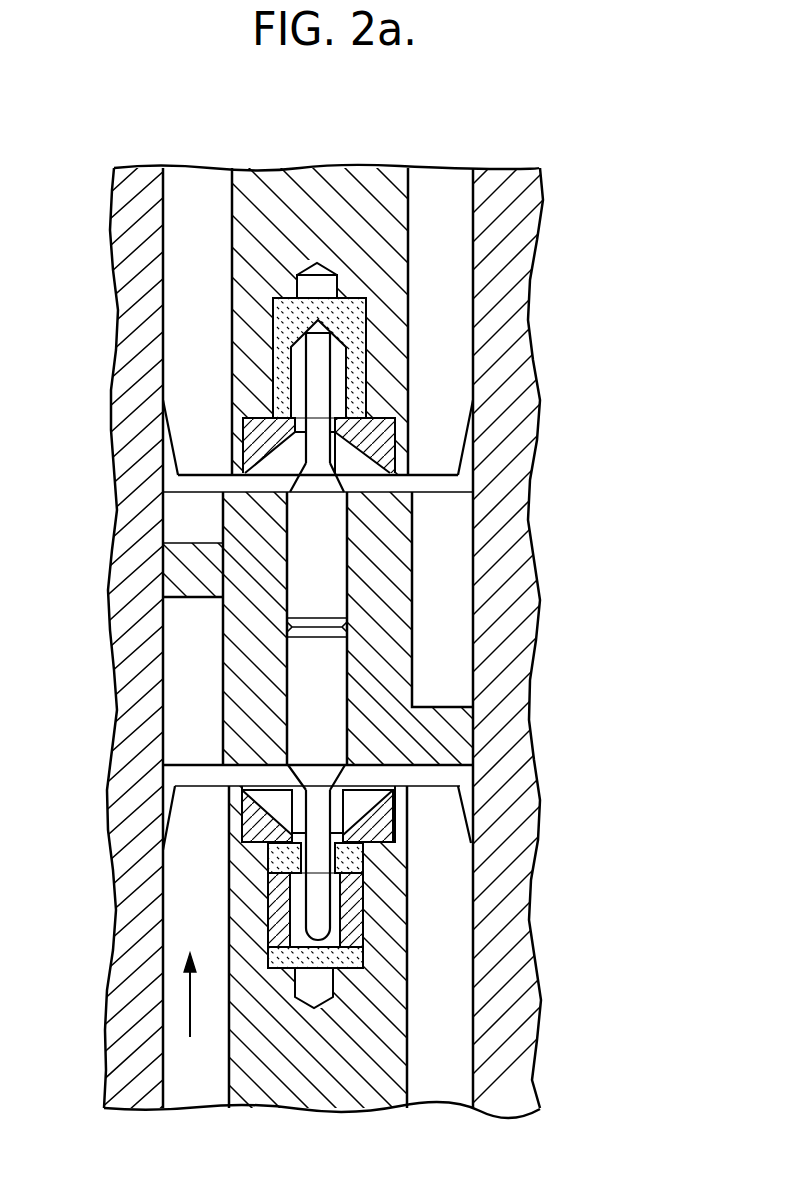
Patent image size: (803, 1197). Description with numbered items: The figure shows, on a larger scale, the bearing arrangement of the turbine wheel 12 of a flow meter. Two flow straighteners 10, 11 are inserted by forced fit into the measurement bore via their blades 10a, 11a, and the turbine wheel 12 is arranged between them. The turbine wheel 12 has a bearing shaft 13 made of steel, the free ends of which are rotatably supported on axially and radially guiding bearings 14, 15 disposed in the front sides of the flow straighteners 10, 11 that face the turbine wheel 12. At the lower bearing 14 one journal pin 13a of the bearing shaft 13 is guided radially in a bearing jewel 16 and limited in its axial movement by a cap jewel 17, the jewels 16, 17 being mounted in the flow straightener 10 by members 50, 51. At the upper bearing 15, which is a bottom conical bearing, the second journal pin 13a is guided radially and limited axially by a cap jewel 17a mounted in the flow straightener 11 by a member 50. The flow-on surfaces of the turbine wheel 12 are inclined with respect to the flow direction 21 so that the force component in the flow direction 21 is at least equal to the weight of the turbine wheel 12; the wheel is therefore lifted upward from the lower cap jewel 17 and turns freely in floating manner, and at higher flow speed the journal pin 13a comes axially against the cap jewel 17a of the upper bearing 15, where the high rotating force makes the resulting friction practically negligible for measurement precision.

The flow straightener 10 is at (372, 1078).
The blades 10a is at (175, 933).
The flow straightener 11 is at (373, 192).
The blades 11a is at (178, 271).
The turbine wheel 12 is at (177, 565).
The bearing shaft 13 is at (300, 688).
The journal pin 13a is at (315, 375).
The bearing 14 is at (365, 905).
The bearing 15 is at (375, 373).
The bearing jewel 16 is at (357, 860).
The cap jewel 17 is at (357, 958).
The cap jewel 17a is at (353, 322).
The flow direction 21 is at (193, 1000).
The member 50 is at (383, 447).
The member 51 is at (353, 917).